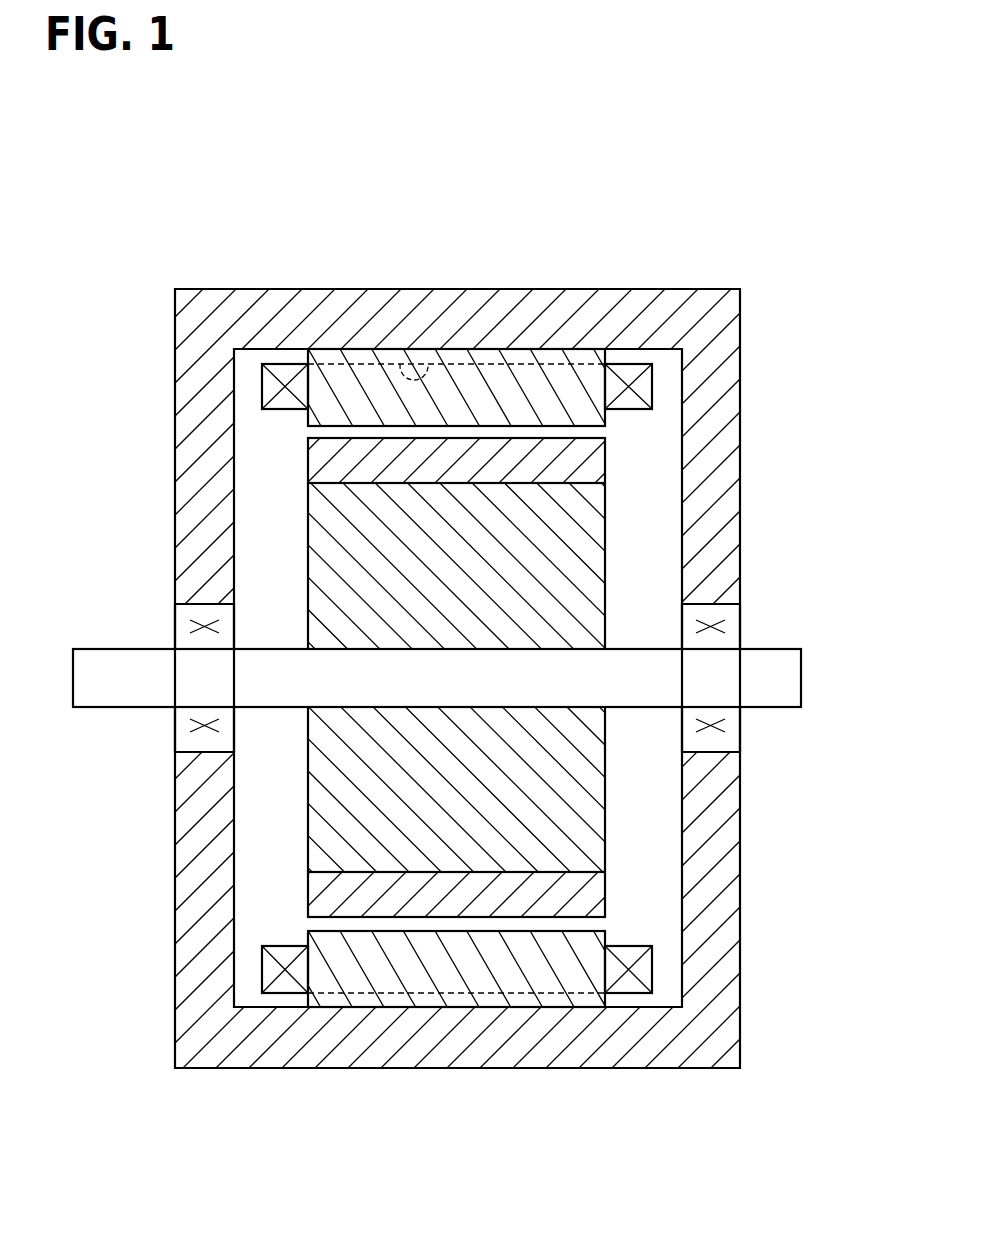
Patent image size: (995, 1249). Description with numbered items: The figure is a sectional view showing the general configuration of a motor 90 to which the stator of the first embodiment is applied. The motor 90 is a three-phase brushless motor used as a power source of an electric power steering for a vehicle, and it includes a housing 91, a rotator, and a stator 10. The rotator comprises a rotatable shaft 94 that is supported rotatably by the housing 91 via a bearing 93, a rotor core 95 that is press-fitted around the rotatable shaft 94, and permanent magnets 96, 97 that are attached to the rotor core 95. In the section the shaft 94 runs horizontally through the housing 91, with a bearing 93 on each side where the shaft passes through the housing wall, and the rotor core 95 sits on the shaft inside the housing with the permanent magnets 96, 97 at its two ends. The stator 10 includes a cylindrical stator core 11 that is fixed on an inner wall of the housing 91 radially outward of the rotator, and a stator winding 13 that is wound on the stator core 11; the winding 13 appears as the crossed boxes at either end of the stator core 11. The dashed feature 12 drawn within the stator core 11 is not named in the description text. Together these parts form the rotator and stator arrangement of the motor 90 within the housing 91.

The motor 90 is at (205, 266).
The housing 91 is at (470, 303).
The stator core 11 is at (540, 362).
The slot 12 is at (400, 372).
The stator 10 is at (262, 385).
The stator winding 13 is at (643, 388).
The permanent magnet 96 is at (588, 464).
The permanent magnet 97 is at (588, 897).
The rotor core 95 is at (587, 568).
The rotatable shaft 94 is at (787, 678).
The bearing 93 is at (185, 627).